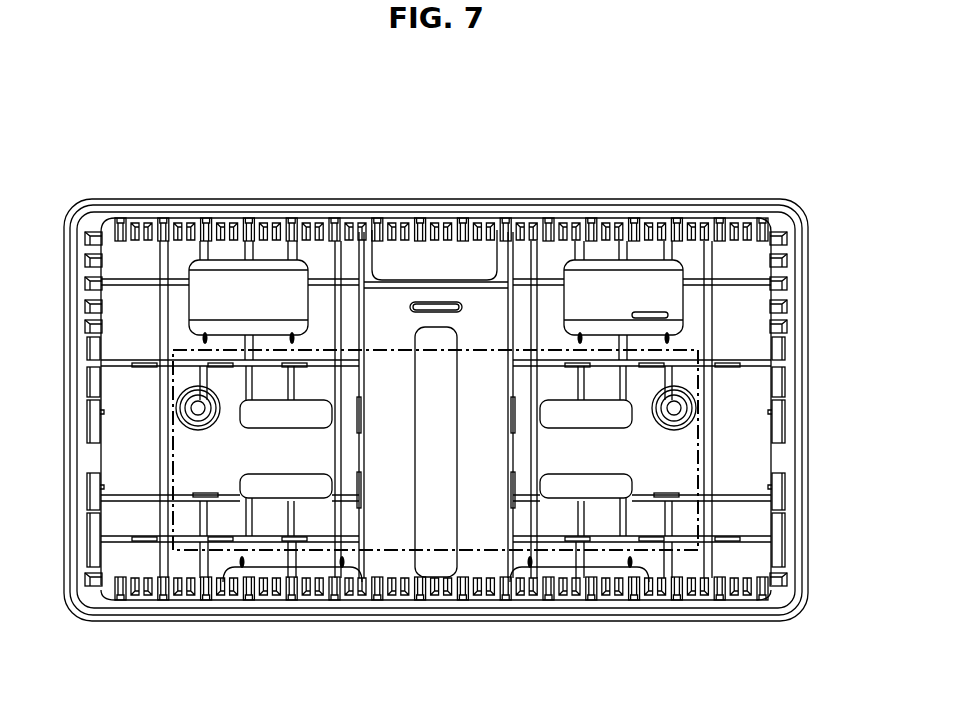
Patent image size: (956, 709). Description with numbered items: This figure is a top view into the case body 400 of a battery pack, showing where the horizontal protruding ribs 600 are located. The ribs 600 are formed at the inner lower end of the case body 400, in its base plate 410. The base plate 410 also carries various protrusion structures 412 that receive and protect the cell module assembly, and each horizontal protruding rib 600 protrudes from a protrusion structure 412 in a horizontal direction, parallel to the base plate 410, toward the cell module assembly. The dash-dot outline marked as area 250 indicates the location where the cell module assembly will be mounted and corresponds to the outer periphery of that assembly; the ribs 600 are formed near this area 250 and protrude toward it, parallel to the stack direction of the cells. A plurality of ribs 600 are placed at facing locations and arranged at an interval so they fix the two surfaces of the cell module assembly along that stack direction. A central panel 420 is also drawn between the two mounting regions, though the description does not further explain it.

The case body 400 is at (162, 148).
The base plate 410 is at (743, 303).
The protrusion structures 412 is at (707, 252).
The central partition panel 420 is at (394, 200).
The area corresponding to the outer periphery of the cell module assembly 250 is at (485, 338).
The horizontal protruding rib 600 is at (292, 333).